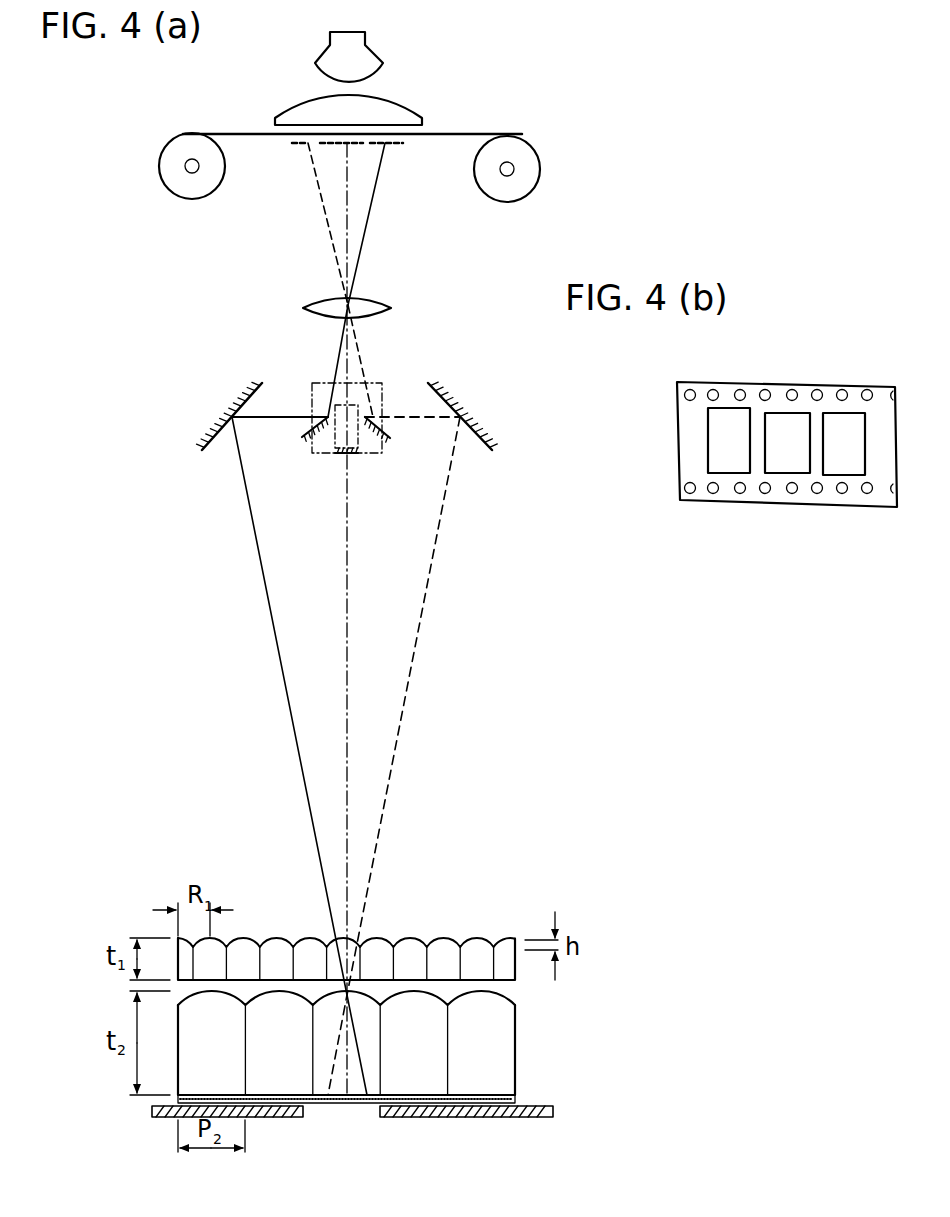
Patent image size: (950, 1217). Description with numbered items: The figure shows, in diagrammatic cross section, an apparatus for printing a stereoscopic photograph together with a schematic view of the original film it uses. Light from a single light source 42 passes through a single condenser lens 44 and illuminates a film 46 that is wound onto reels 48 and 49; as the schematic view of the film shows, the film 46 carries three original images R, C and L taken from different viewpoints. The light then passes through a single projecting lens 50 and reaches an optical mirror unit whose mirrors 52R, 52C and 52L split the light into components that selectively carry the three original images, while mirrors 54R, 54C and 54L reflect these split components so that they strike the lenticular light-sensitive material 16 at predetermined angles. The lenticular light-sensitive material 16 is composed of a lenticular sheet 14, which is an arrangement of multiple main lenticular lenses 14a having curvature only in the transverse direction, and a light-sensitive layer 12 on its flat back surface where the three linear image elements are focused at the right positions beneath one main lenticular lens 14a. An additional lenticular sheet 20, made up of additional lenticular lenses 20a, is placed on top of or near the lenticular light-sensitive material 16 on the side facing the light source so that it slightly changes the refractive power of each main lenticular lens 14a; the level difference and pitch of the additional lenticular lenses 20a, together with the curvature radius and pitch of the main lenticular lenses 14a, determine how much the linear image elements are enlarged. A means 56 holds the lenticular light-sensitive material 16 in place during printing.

In FIG. 4a, the light source 42 is at (372, 58).
In FIG. 4a, the condenser lens 44 is at (388, 110).
In FIG. 4a, the film 46 is at (461, 133).
In FIG. 4b, the film 46 is at (833, 385).
In FIG. 4a, the reel 48 is at (507, 202).
In FIG. 4a, the reel 49 is at (191, 199).
In FIG. 4a, the projecting lens 50 is at (371, 301).
In FIG. 4a, the mirror 52R is at (300, 433).
In FIG. 4a, the mirror 52L is at (392, 424).
In FIG. 4a, the mirror 52C is at (355, 455).
In FIG. 4a, the mirror 54R is at (213, 441).
In FIG. 4a, the mirror 54L is at (477, 440).
In FIG. 4a, the mirror 54C is at (337, 460).
In FIG. 4a, the additional lenticular sheet 20 is at (363, 921).
In FIG. 4a, the additional lenticular lens 20a is at (412, 942).
In FIG. 4a, the lenticular sheet 14 is at (401, 1036).
In FIG. 4a, the main lenticular lens 14a is at (500, 1003).
In FIG. 4a, the light-sensitive layer 12 is at (513, 1102).
In FIG. 4a, the lenticular light-sensitive material 16 is at (441, 1041).
In FIG. 4a, the means for holding the lenticular light-sensitive material 56 is at (487, 1120).